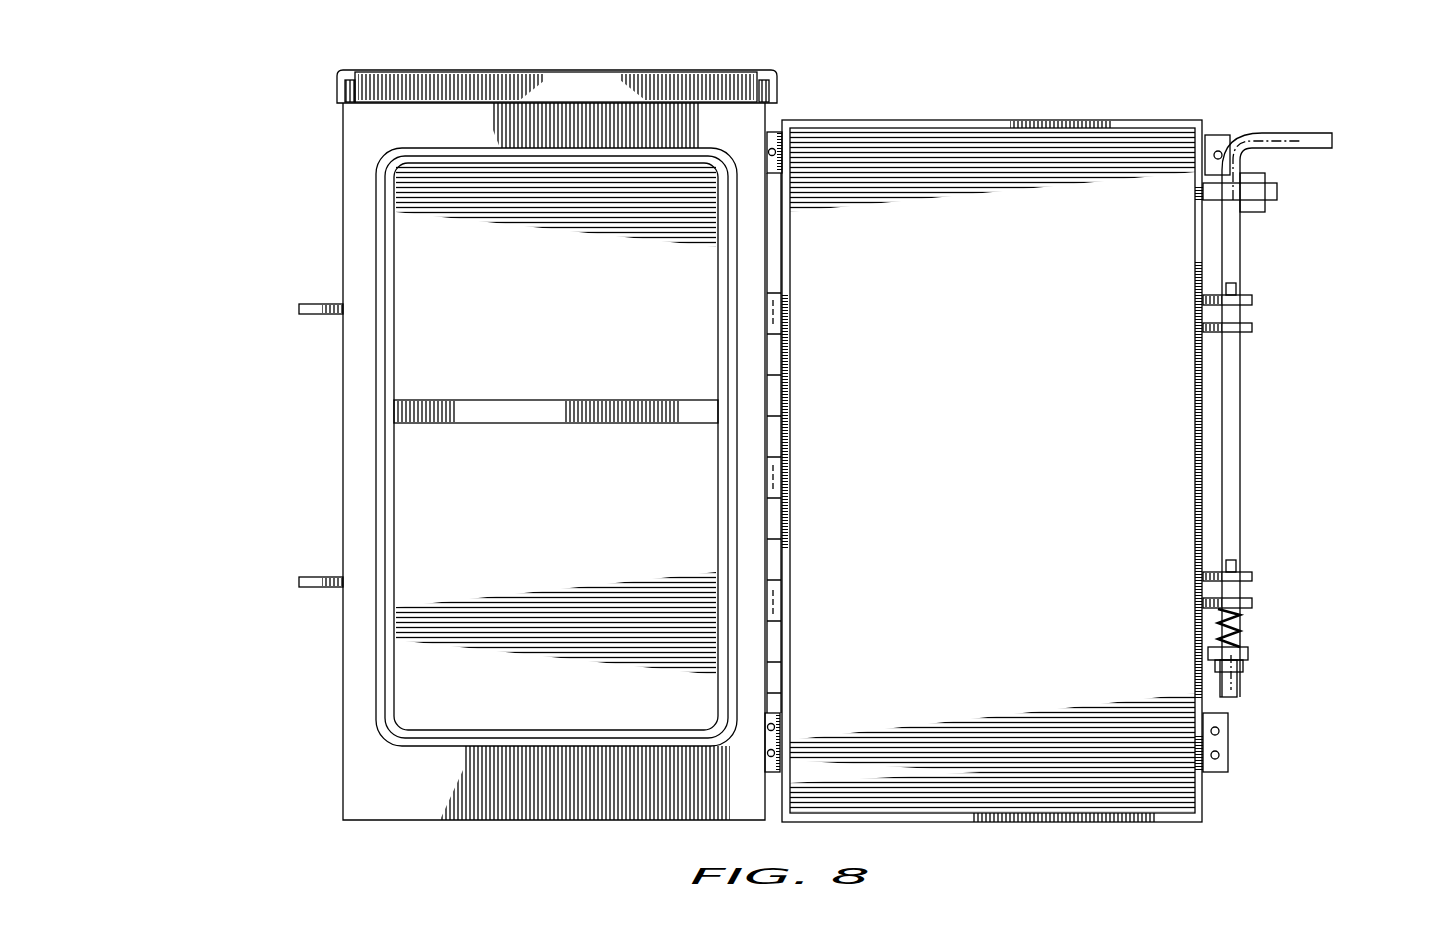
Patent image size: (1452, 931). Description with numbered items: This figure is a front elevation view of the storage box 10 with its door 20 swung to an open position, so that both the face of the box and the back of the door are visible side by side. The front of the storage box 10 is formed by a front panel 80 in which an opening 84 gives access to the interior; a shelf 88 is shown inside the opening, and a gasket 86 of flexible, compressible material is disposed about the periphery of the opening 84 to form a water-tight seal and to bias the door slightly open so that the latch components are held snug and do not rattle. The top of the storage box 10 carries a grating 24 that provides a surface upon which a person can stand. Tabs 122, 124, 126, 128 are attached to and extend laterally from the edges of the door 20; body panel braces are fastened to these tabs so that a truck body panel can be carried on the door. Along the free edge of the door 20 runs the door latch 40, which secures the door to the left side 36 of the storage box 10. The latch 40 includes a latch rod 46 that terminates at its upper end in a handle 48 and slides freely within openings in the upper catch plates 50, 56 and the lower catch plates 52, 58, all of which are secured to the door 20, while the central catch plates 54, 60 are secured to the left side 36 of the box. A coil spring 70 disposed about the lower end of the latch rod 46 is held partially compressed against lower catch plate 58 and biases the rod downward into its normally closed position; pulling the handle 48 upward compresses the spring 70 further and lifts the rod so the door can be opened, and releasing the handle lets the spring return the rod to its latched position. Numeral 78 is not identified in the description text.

The storage box 10 is at (258, 168).
The door 20 is at (860, 90).
The grating 24 is at (421, 66).
The left side 36 is at (502, 446).
The door latch 40 is at (1324, 380).
The latch rod 46 is at (1242, 440).
The handle 48 is at (1286, 130).
The upper catch plate 50 is at (1253, 300).
The lower catch plate 52 is at (1255, 328).
The central catch plate 54 is at (299, 310).
The upper catch plate 56 is at (1253, 576).
The lower catch plate 58 is at (1255, 603).
The central catch plate 60 is at (299, 582).
The spring 70 is at (1243, 630).
The latch slot 78 is at (1190, 180).
The front panel 80 is at (403, 784).
The opening 84 is at (405, 560).
The gasket 86 is at (385, 258).
The shelf 88 is at (541, 400).
The tab 122 is at (1216, 135).
The tab 124 is at (769, 160).
The tab 126 is at (1230, 740).
The tab 128 is at (775, 738).